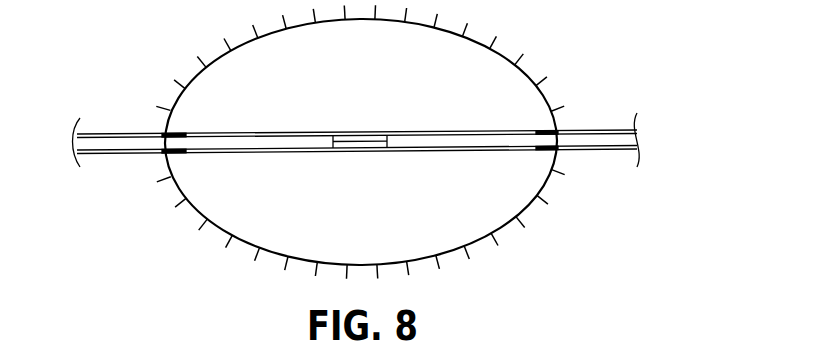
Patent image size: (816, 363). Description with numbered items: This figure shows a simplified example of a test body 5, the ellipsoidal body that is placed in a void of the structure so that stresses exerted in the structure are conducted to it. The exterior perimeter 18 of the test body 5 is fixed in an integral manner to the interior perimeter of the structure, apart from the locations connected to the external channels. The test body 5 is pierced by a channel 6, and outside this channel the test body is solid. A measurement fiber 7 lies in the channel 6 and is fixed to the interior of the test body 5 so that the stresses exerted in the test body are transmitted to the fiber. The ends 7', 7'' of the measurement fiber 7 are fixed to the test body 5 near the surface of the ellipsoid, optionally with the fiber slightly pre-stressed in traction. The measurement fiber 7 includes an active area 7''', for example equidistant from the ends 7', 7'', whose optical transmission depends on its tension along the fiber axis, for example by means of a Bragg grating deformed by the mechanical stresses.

The test body 5 is at (557, 253).
The channel 6 is at (417, 153).
The measurement fiber 7 is at (269, 216).
The end of the measurement fiber 7' is at (147, 171).
The end of the measurement fiber 7'' is at (578, 168).
The active area 7''' is at (317, 225).
The exterior perimeter 18 is at (510, 58).